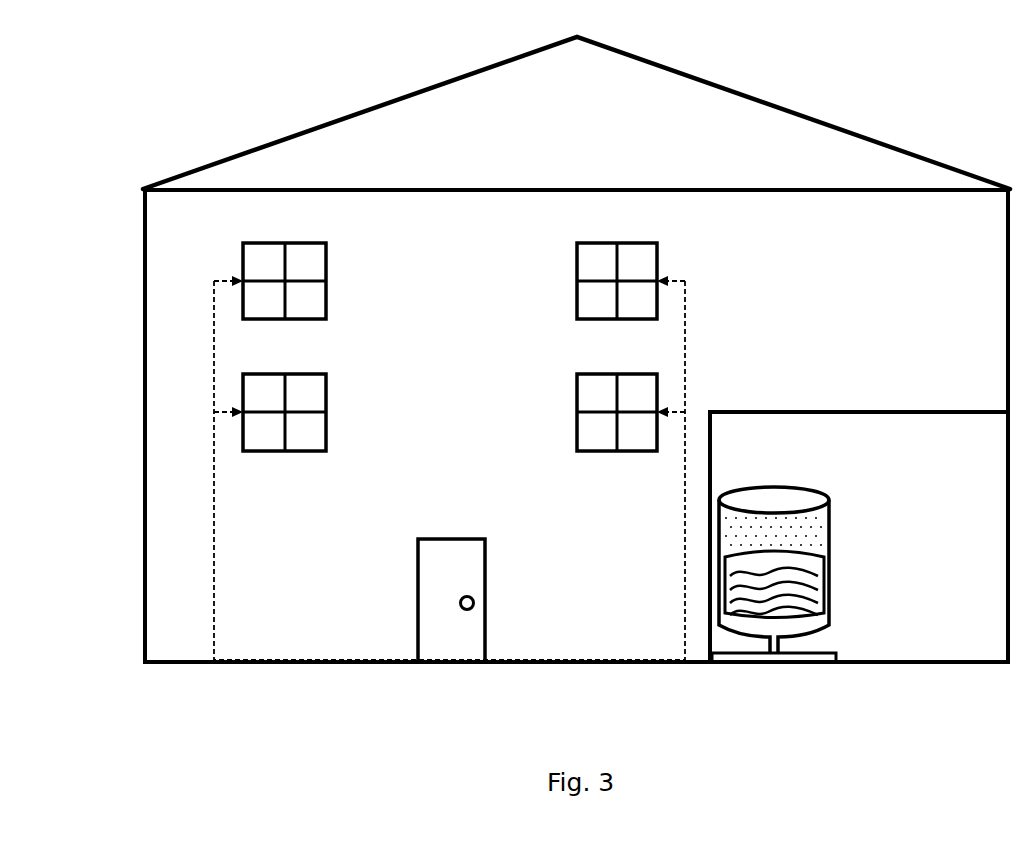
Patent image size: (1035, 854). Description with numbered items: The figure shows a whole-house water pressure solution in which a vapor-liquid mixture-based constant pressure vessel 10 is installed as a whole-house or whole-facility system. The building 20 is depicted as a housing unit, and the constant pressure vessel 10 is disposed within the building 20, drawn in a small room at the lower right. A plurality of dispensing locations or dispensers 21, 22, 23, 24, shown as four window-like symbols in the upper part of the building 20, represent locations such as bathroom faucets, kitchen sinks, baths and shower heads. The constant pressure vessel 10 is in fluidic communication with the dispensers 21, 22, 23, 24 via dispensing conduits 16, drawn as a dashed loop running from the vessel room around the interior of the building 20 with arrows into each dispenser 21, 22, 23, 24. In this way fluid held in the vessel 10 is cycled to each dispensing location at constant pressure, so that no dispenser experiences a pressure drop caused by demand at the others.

The constant pressure vessel 10 is at (797, 478).
The dispensing conduits 16 is at (700, 329).
The building 20 is at (152, 113).
The dispenser 21 is at (326, 269).
The dispenser 22 is at (326, 404).
The dispenser 23 is at (577, 268).
The dispenser 24 is at (577, 404).